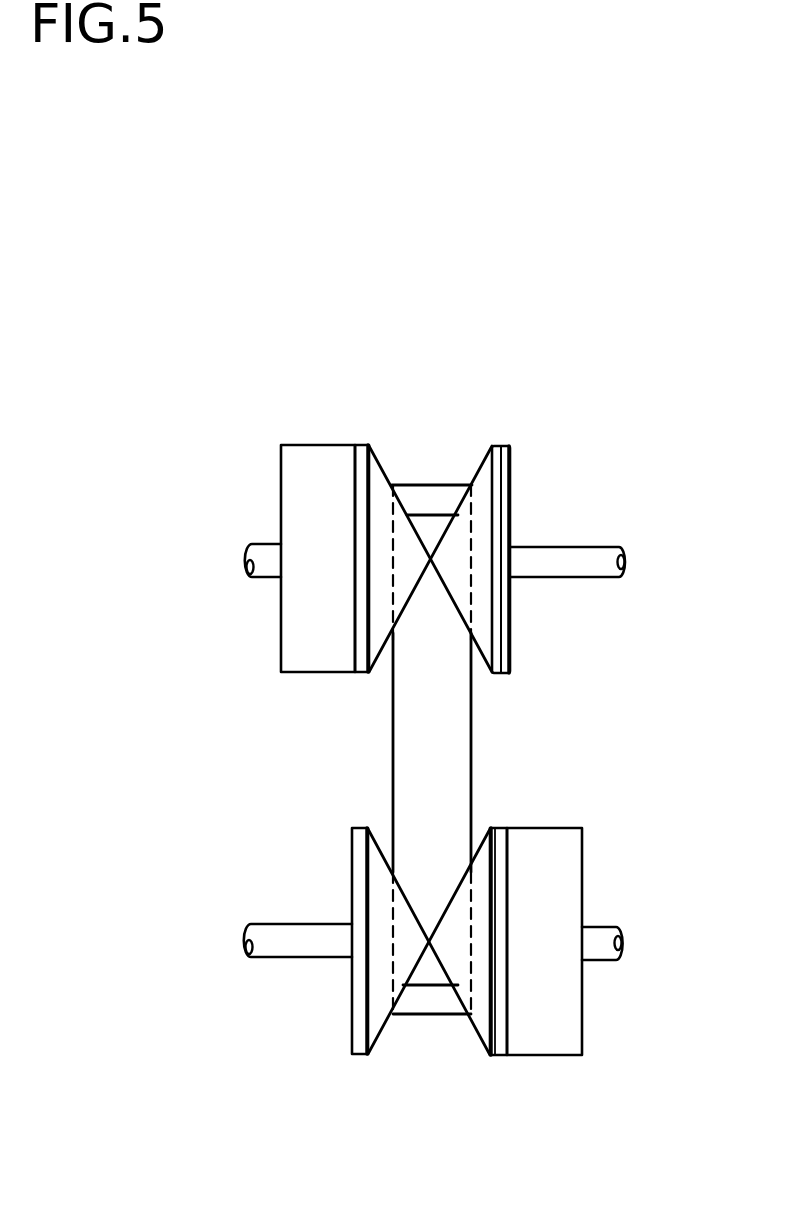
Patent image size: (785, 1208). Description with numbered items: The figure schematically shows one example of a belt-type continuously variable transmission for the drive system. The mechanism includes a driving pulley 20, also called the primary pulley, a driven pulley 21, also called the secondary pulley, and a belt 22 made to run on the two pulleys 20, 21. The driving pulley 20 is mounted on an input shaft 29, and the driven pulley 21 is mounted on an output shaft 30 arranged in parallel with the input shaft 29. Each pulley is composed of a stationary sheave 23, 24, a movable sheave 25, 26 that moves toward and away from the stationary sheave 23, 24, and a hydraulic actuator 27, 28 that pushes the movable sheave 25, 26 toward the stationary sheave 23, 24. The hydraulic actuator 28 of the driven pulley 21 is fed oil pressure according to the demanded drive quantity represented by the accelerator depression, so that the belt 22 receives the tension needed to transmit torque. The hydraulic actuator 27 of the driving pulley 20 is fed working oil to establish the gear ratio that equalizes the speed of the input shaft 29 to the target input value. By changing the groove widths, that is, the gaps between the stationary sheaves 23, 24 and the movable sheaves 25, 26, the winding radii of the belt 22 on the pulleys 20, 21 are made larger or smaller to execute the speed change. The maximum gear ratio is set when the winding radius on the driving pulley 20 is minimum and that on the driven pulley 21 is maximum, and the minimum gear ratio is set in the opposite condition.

The driving pulley 20 is at (424, 501).
The driven pulley 21 is at (455, 995).
The belt 22 is at (472, 735).
The stationary sheave 23 is at (500, 473).
The stationary sheave 24 is at (362, 860).
The movable sheave 25 is at (362, 445).
The movable sheave 26 is at (497, 1057).
The hydraulic actuator 27 is at (292, 474).
The hydraulic actuator 28 is at (572, 868).
The input shaft 29 is at (592, 570).
The output shaft 30 is at (600, 962).